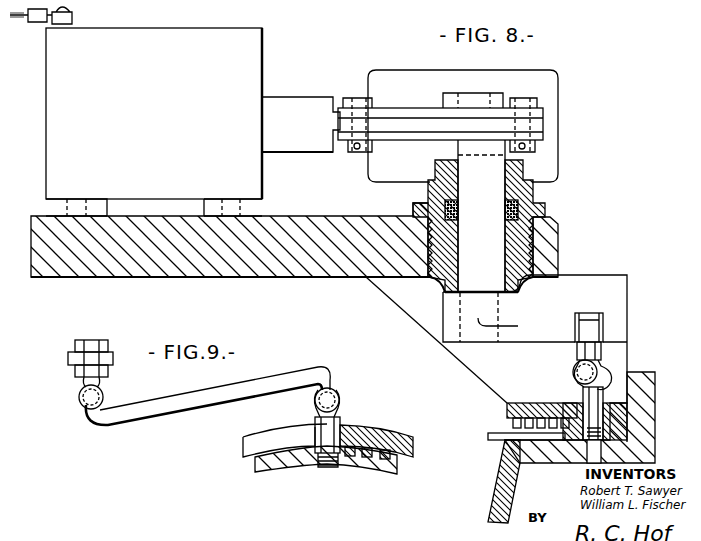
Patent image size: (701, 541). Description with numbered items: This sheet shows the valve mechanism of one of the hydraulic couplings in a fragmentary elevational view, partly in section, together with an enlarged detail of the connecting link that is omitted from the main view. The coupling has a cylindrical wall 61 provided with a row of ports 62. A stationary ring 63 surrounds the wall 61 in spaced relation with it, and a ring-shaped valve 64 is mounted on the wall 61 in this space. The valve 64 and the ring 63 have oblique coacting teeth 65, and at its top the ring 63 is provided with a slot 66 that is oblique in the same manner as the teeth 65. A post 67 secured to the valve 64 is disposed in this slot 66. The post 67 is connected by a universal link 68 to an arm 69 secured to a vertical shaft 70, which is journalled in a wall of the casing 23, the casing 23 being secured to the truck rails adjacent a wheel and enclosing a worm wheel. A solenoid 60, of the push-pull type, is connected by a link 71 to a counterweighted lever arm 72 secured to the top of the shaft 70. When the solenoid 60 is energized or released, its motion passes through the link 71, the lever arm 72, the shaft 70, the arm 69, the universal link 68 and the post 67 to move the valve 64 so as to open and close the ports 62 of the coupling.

In FIG. 8, the casing 23 is at (559, 252).
In FIG. 8, the solenoid 60 is at (154, 122).
In FIG. 8, the cylindrical wall 61 is at (500, 482).
In FIG. 8, the ports 62 is at (585, 458).
In FIG. 8, the stationary ring 63 is at (520, 403).
In FIG. 9, the stationary ring 63 is at (374, 430).
In FIG. 8, the ring-shaped valve 64 is at (508, 437).
In FIG. 9, the ring-shaped valve 64 is at (305, 468).
In FIG. 8, the oblique coacting teeth 65 is at (512, 425).
In FIG. 9, the oblique coacting teeth 65 is at (368, 468).
In FIG. 8, the slot 66 is at (577, 402).
In FIG. 9, the slot 66 is at (280, 439).
In FIG. 8, the post 67 is at (612, 370).
In FIG. 9, the post 67 is at (340, 401).
In FIG. 9, the universal link 68 is at (193, 404).
In FIG. 8, the arm 69 is at (544, 330).
In FIG. 9, the arm 69 is at (67, 361).
In FIG. 8, the vertical shaft 70 is at (479, 216).
In FIG. 8, the link 71 is at (403, 118).
In FIG. 8, the counterweighted lever arm 72 is at (560, 81).